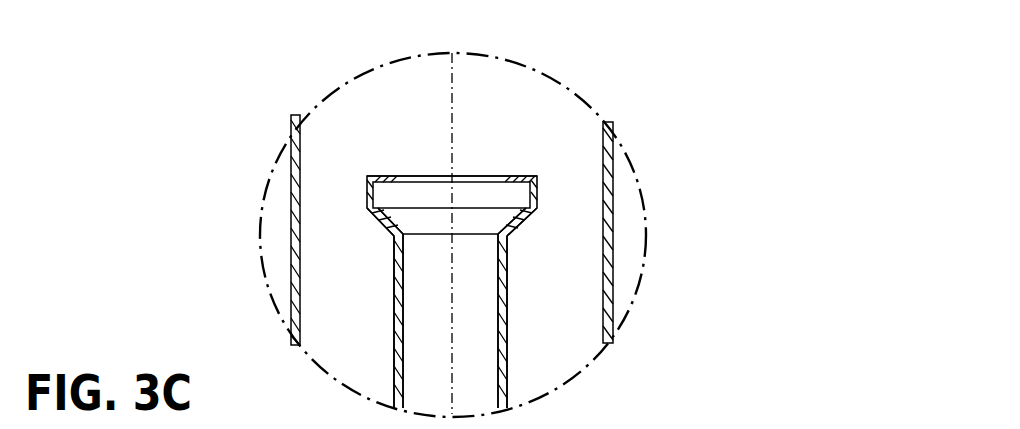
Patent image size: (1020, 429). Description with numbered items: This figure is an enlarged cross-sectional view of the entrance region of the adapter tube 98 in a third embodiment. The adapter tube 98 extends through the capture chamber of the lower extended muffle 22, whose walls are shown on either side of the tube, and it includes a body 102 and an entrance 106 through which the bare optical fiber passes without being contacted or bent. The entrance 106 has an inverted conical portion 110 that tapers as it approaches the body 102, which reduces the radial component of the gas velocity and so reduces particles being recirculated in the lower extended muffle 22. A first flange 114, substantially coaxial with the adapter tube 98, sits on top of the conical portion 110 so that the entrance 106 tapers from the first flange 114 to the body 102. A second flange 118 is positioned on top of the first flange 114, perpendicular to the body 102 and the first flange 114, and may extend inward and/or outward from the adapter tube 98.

The lower extended muffle 22 is at (613, 222).
The adapter tube 98 is at (517, 335).
The body 102 is at (400, 323).
The entrance 106 is at (537, 168).
The conical portion 110 is at (376, 229).
The first flange 114 is at (367, 187).
The second flange 118 is at (387, 176).